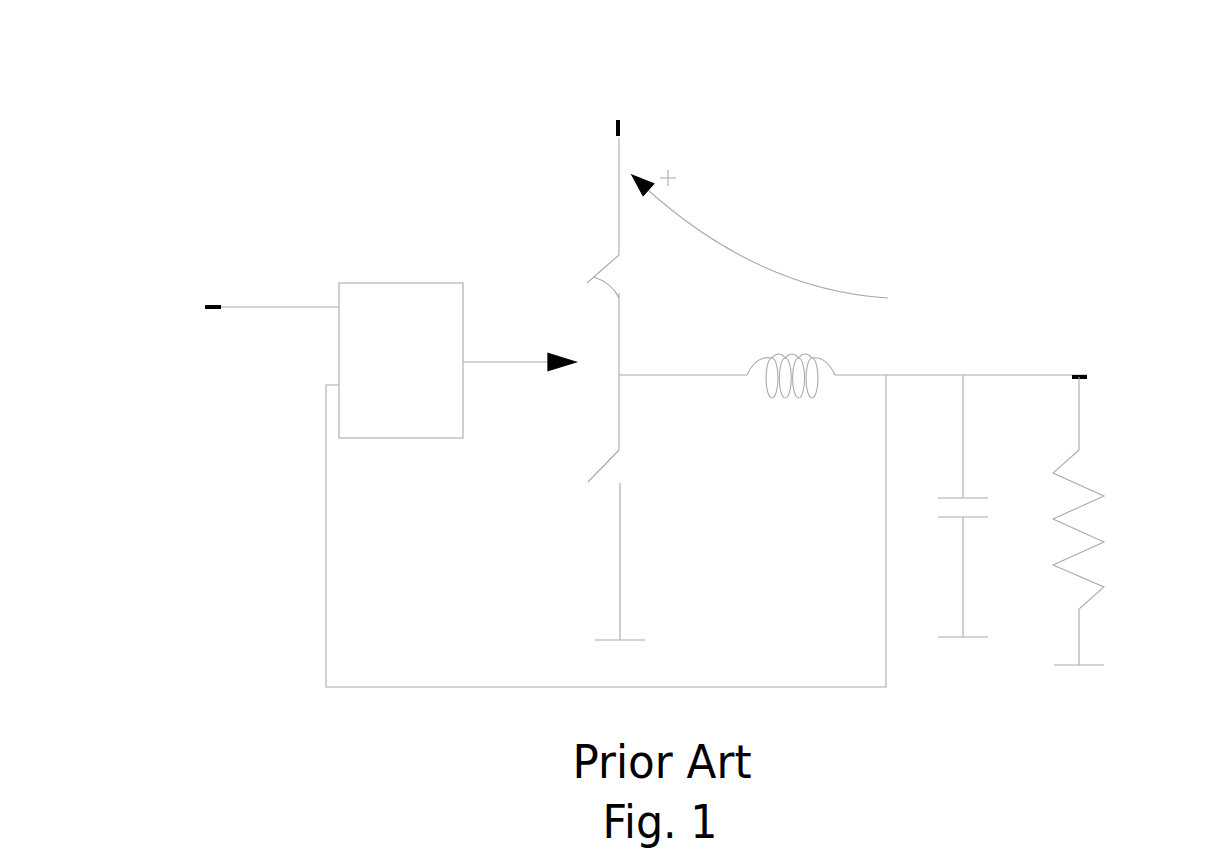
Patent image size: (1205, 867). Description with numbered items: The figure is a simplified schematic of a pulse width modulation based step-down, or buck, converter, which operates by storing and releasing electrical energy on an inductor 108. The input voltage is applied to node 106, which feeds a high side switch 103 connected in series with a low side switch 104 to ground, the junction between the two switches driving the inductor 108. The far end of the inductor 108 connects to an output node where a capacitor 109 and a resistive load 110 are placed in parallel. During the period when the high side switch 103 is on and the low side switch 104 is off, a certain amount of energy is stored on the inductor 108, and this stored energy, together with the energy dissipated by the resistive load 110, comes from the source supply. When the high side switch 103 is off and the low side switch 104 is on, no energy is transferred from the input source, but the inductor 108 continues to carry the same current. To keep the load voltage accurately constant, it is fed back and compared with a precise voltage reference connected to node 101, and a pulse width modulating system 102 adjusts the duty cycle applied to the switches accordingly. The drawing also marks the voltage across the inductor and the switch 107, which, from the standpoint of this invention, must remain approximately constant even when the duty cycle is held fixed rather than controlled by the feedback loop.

The voltage reference node 101 is at (278, 308).
The pulse width modulating (PWM) system 102 is at (406, 283).
The high side switch 103 is at (590, 275).
The low side switch 104 is at (600, 490).
The input voltage node 106 is at (625, 147).
The voltage across the inductor and the switch 107 is at (732, 205).
The inductor 108 is at (783, 407).
The capacitor 109 is at (947, 520).
The resistive load 110 is at (1102, 490).